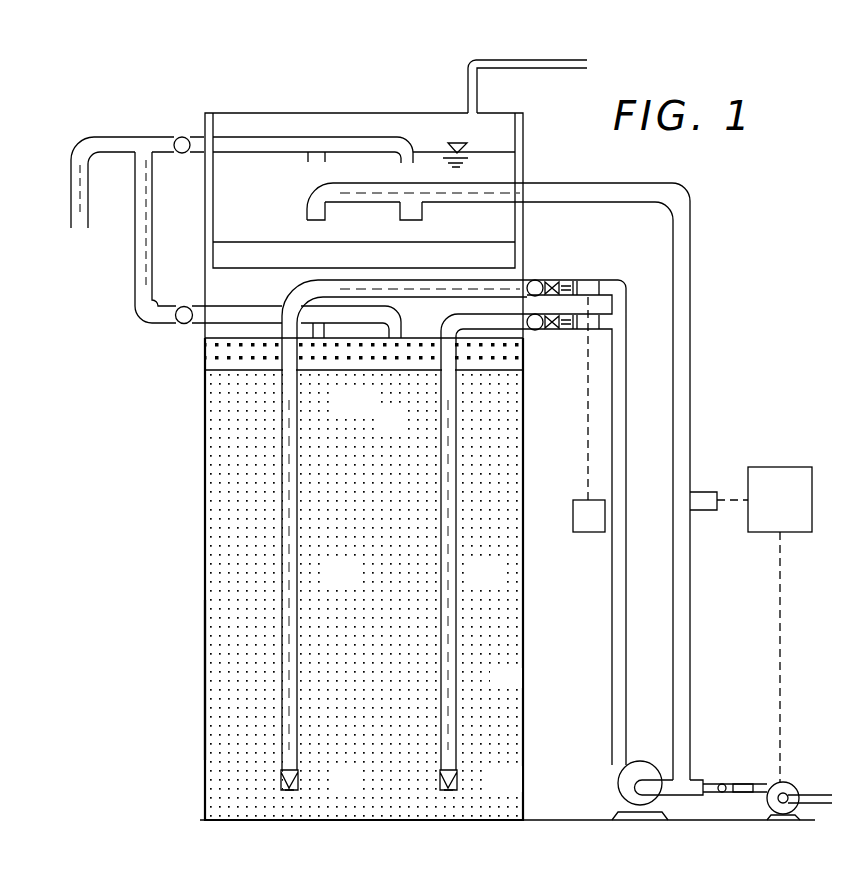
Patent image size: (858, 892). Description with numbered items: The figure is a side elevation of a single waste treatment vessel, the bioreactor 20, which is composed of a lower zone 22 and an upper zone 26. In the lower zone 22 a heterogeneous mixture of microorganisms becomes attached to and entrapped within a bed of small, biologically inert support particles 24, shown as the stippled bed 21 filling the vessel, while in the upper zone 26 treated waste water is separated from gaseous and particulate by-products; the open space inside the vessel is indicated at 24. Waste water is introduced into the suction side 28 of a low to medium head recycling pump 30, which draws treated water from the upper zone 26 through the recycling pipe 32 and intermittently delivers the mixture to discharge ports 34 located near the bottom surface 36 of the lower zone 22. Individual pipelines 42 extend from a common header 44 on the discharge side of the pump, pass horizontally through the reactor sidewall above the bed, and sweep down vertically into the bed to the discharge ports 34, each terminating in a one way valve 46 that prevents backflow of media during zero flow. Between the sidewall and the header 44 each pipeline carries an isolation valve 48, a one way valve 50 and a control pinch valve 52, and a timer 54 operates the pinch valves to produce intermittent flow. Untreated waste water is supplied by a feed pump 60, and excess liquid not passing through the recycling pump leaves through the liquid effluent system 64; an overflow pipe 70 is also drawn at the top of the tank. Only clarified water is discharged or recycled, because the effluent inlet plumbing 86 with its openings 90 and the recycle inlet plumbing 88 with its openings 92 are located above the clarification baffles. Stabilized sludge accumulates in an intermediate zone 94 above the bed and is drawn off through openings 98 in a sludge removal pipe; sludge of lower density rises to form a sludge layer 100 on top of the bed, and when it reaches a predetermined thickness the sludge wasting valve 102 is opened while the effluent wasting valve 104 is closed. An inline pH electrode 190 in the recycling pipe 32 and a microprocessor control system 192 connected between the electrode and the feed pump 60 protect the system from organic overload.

The bioreactor 20 is at (205, 527).
The bed of particulate material 21 is at (222, 615).
The lower zone 22 is at (208, 710).
The support particles 24 is at (497, 678).
The upper zone 26 is at (208, 208).
The suction side 28 is at (682, 792).
The recycling pump 30 is at (613, 788).
The recycling pipe 32 is at (692, 400).
The discharge ports 34 is at (288, 790).
The bottom surface 36 is at (239, 819).
The pipelines 42 is at (290, 577).
The common header 44 is at (628, 306).
The one way valve 46 is at (299, 778).
The isolation valve 48 is at (535, 280).
The one way valve 50 is at (562, 280).
The control pinch valve 52 is at (590, 280).
The timer 54 is at (573, 518).
The feed pump 60 is at (795, 787).
The liquid effluent system 64 is at (75, 186).
The overflow pipe 70 is at (447, 120).
The effluent inlet plumbing 86 is at (248, 147).
The recycle inlet plumbing 88 is at (352, 182).
The openings 90 is at (408, 140).
The openings 92 is at (403, 222).
The intermediate zone 94 is at (205, 357).
The openings 98 is at (398, 372).
The sludge layer 100 is at (350, 358).
The sludge wasting valve 102 is at (183, 323).
The effluent wasting valve 104 is at (173, 143).
The inline pH electrode 190 is at (700, 492).
The microprocessor control system 192 is at (787, 467).